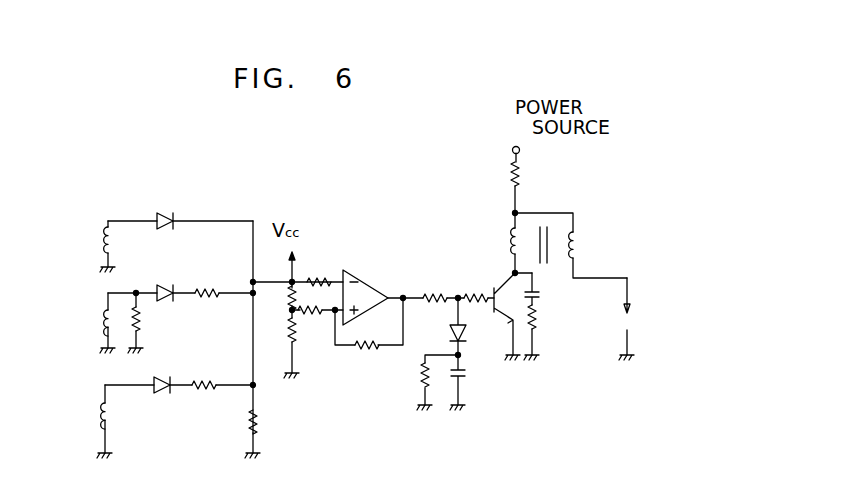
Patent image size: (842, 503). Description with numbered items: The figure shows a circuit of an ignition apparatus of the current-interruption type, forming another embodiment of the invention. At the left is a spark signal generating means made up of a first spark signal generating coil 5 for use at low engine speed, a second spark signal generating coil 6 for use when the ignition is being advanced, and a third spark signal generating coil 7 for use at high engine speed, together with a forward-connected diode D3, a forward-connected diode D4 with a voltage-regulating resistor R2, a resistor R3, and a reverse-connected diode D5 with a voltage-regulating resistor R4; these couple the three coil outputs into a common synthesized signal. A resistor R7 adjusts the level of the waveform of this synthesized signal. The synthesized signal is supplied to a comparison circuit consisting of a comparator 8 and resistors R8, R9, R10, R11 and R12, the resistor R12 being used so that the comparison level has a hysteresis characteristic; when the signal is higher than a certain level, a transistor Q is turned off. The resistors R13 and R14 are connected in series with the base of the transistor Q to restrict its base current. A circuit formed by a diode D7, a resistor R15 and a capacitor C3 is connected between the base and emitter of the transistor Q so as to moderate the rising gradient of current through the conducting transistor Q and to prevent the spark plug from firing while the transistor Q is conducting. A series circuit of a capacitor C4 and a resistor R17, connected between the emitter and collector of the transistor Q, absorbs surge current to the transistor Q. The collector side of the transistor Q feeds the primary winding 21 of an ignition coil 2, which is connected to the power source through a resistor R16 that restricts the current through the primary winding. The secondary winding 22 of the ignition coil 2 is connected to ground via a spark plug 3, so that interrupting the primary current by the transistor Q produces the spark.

The first spark signal generating coil 5 is at (106, 247).
The second spark signal generating coil 6 is at (104, 322).
The third spark signal generating coil 7 is at (104, 416).
The forward-connected diode D3 is at (164, 210).
The forward-connected diode D4 is at (164, 286).
The reverse-connected diode D5 is at (160, 379).
The diode D7 is at (451, 335).
The voltage-regulating resistor R2 is at (205, 288).
The resistor R3 is at (142, 321).
The voltage-regulating resistor R4 is at (205, 380).
The resistor R7 is at (248, 422).
The resistor R8 is at (316, 278).
The resistor R9 is at (288, 296).
The resistor R10 is at (288, 331).
The resistor R11 is at (310, 318).
The resistor R12 is at (365, 350).
The resistor R13 is at (428, 297).
The resistor R14 is at (474, 297).
The resistor R15 is at (422, 373).
The resistor R16 is at (510, 178).
The resistor R17 is at (540, 322).
The capacitor C3 is at (465, 373).
The capacitor C4 is at (540, 297).
The comparator 8 is at (371, 278).
The transistor Q is at (492, 285).
The ignition coil 2 is at (545, 222).
The primary winding 21 is at (507, 235).
The secondary winding 22 is at (580, 237).
The spark plug 3 is at (630, 320).